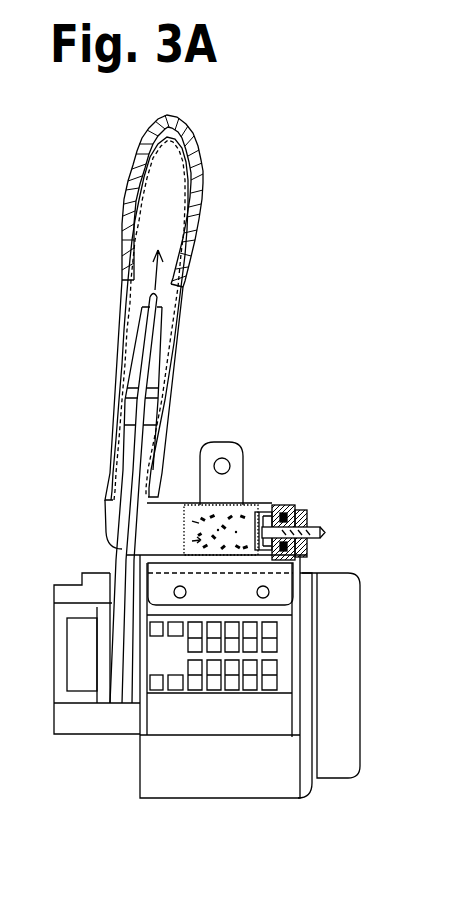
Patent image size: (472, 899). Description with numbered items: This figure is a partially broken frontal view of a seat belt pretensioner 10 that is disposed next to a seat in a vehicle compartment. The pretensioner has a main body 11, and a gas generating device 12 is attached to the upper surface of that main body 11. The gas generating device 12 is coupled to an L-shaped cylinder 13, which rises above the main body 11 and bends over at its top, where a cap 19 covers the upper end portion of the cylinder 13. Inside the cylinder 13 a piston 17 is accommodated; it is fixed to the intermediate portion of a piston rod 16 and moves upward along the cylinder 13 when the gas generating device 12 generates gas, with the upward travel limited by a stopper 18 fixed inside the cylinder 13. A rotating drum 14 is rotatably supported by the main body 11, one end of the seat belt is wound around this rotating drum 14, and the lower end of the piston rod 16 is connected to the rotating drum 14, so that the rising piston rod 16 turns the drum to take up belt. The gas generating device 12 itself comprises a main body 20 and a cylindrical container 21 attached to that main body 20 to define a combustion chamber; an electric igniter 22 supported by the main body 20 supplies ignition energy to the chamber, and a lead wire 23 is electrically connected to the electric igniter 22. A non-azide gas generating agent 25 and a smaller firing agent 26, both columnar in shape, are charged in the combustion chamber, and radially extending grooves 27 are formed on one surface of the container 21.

The seat belt pretensioner 10 is at (267, 301).
The main body 11 is at (356, 617).
The gas generating device 12 is at (318, 501).
The L-shaped cylinder 13 is at (117, 425).
The rotating drum 14 is at (102, 652).
The piston rod 16 is at (122, 520).
The piston 17 is at (160, 412).
The stopper 18 is at (170, 340).
The cap 19 is at (203, 183).
The main body 20 is at (282, 505).
The cylindrical container 21 is at (193, 505).
The electric igniter 22 is at (253, 515).
The lead wire 23 is at (326, 533).
The non-azide gas generating agent 25 is at (246, 556).
The firing agent 26 is at (191, 541).
The radially extending grooves 27 is at (191, 521).